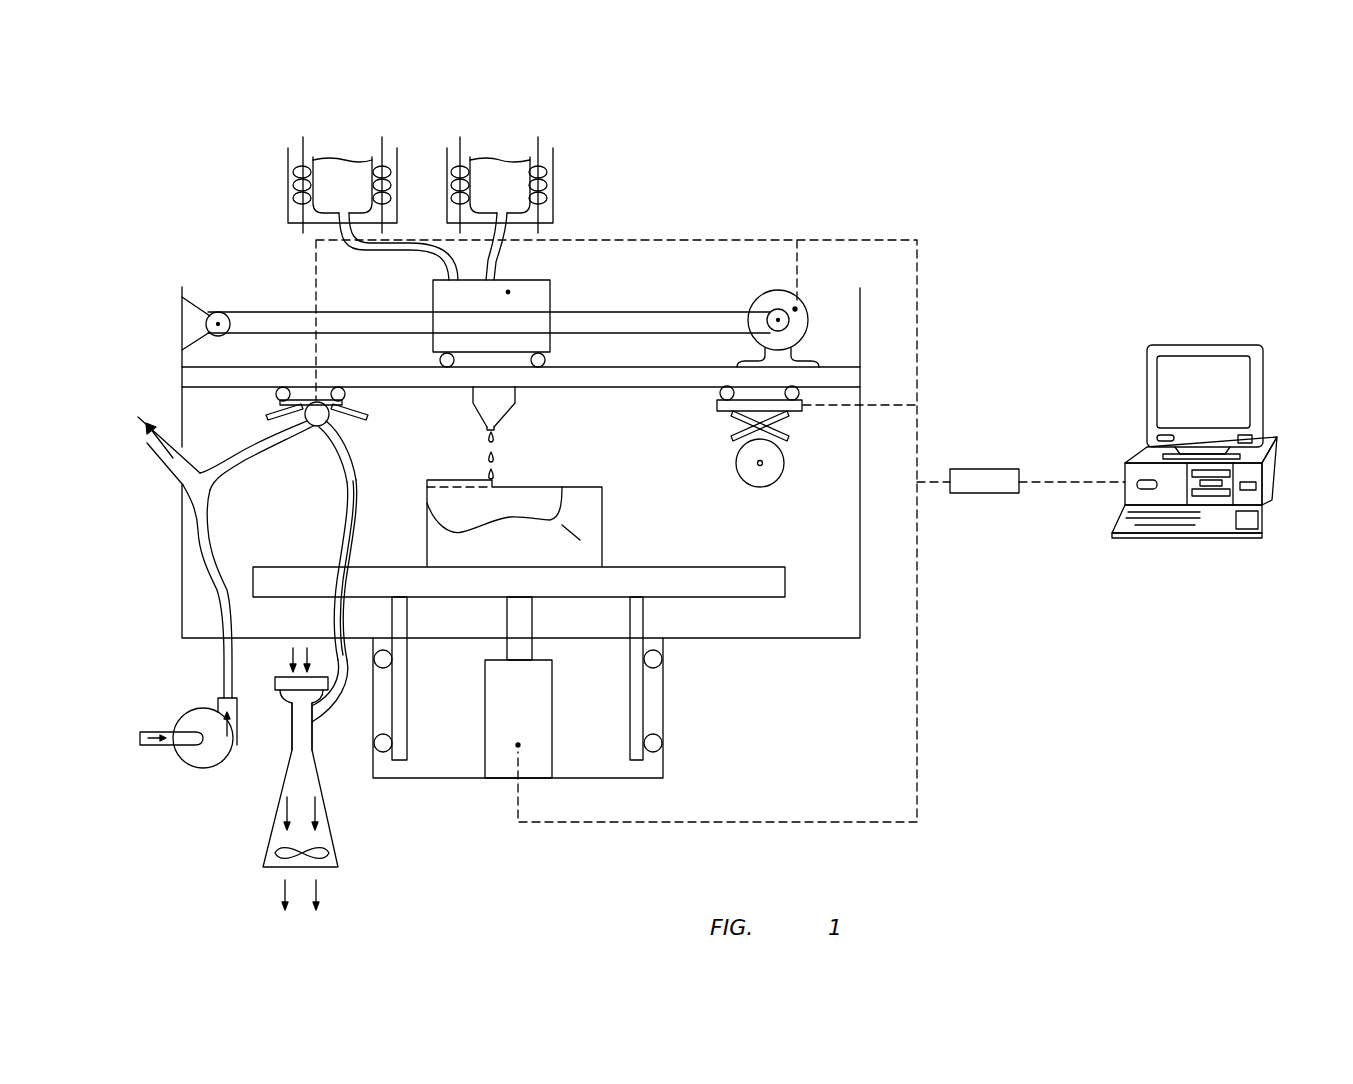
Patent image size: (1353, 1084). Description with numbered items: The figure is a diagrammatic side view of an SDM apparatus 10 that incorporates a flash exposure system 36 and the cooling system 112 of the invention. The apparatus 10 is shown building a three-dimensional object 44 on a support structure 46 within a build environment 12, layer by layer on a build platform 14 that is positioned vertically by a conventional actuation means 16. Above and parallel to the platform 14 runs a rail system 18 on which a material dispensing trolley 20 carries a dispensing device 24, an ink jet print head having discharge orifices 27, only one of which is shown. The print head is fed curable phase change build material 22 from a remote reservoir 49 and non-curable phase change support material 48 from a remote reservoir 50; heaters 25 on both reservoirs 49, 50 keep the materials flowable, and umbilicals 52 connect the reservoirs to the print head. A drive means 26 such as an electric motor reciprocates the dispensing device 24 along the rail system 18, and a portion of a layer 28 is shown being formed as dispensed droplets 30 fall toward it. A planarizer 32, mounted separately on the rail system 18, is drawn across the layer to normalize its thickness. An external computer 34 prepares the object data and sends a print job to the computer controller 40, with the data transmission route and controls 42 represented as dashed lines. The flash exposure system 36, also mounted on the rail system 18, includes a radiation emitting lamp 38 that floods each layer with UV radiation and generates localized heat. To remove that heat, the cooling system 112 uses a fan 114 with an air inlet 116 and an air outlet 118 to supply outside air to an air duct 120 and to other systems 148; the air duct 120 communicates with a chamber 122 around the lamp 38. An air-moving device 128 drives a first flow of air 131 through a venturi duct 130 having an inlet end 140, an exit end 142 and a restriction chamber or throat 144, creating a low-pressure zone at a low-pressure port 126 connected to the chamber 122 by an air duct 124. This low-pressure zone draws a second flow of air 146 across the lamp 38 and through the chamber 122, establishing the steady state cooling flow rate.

The SDM apparatus 10 is at (201, 237).
The build environment 12 is at (614, 497).
The build platform 14 is at (287, 567).
The actuation means 16 is at (502, 765).
The rail system 18 is at (211, 388).
The material dispensing trolley 20 is at (495, 358).
The curable phase change build material 22 is at (363, 181).
The dispensing device 24 is at (475, 393).
The heaters 25 is at (300, 156).
The drive means 26 is at (771, 291).
The discharge orifices 27 is at (482, 428).
The layer 28 is at (460, 480).
The dispensed droplets 30 is at (495, 432).
The planarizer 32 is at (770, 485).
The external computer 34 is at (1275, 470).
The flash exposure system 36 is at (270, 442).
The radiation emitting lamp 38 is at (316, 420).
The computer controller 40 is at (975, 469).
The data transmission route and controls 42 is at (313, 258).
The three-dimensional object 44 is at (548, 503).
The support structure 46 is at (583, 538).
The non-curable phase change support material 48 is at (500, 172).
The remote reservoir 49 is at (290, 187).
The remote reservoir 50 is at (552, 186).
The umbilicals 52 is at (388, 250).
The cooling system 112 is at (225, 810).
The fan 114 is at (198, 710).
The air inlet 116 is at (132, 742).
The air outlet 118 is at (262, 690).
The air duct 120 is at (203, 566).
The chamber 122 is at (304, 432).
The air duct 124 is at (360, 504).
The low-pressure port 126 is at (318, 725).
The air-moving device 128 is at (330, 843).
The venturi duct 130 is at (332, 799).
The first flow of air 131 is at (305, 655).
The inlet end 140 is at (285, 673).
The exit end 142 is at (330, 870).
The restriction chamber or throat 144 is at (292, 718).
The second flow of air 146 is at (354, 537).
The other systems 148 is at (148, 400).